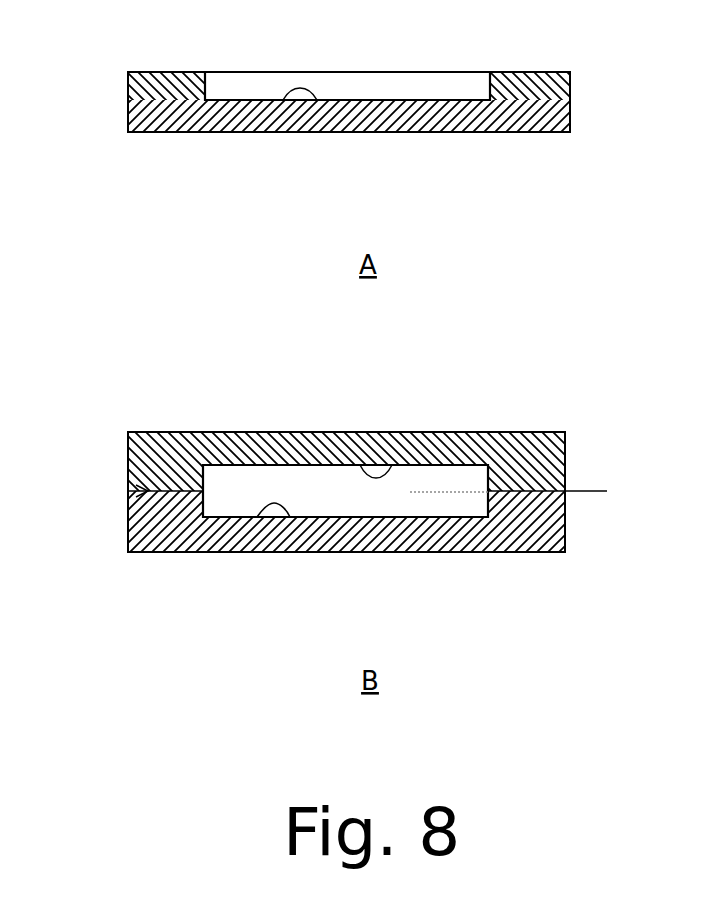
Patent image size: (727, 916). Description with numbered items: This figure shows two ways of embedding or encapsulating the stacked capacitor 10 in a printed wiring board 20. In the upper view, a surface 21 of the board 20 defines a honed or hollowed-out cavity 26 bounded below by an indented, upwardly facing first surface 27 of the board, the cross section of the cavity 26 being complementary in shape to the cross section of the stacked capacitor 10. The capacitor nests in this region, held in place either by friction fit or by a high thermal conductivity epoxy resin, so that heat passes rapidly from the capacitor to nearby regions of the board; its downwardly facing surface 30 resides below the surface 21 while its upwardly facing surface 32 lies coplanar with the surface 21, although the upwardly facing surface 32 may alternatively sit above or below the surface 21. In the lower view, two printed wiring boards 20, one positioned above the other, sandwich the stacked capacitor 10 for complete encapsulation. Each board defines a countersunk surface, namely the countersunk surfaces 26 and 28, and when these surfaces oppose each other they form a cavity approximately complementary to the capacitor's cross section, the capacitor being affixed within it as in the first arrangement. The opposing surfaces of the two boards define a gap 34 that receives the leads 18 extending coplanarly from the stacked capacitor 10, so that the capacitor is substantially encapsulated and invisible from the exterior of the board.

The stacked capacitor 10 is at (373, 90).
The leads 18 is at (441, 490).
The printed wiring board 20 is at (549, 133).
The surface of the board 21 is at (527, 72).
The cavity 26 is at (178, 72).
The first surface of the board 27 is at (287, 100).
The countersunk surface 28 is at (358, 465).
The downwardly facing surface of the capacitor 30 is at (457, 100).
The upwardly facing surface of the capacitor 32 is at (253, 73).
The gap 34 is at (135, 491).